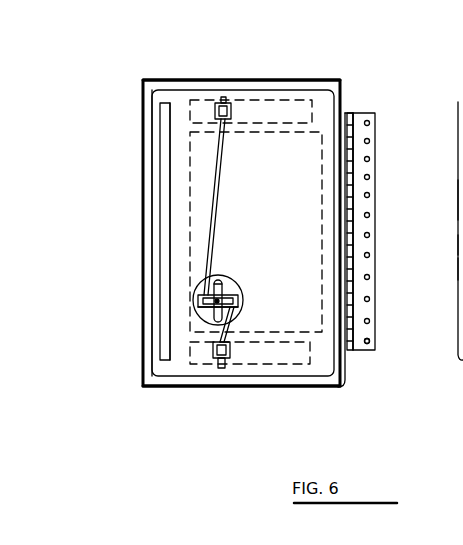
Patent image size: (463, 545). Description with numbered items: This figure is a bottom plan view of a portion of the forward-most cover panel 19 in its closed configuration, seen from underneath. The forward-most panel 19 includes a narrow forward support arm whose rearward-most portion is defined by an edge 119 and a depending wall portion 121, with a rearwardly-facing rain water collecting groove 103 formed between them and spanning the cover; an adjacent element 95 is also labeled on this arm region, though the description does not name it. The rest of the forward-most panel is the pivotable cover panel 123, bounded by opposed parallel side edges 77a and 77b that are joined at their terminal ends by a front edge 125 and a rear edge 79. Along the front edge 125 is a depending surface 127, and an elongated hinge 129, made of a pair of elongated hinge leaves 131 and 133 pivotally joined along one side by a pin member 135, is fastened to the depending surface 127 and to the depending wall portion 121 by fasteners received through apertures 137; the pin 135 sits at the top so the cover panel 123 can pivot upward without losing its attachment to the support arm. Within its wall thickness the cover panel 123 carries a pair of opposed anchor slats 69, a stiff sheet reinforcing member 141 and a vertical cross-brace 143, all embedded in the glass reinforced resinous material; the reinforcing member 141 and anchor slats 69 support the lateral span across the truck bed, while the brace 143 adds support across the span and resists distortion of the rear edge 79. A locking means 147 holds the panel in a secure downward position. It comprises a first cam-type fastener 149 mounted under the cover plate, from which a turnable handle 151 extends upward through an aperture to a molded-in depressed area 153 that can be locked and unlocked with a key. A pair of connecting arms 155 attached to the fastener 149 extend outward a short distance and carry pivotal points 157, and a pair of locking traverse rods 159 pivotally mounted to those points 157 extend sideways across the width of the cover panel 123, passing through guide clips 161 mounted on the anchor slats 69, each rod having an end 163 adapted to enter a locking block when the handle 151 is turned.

The cover panel 19 is at (158, 113).
The anchor slats 69 is at (190, 100).
The side edge 77a is at (272, 388).
The side edge 77b is at (285, 80).
The rear edge 79 is at (150, 199).
The door frame member 95 is at (458, 199).
The rain water collecting groove 103 is at (458, 246).
The edge 119 is at (458, 119).
The depending wall portion 121 is at (458, 268).
The pivotable cover panel 123 is at (336, 388).
The front edge 125 is at (370, 226).
The depending surface 127 is at (345, 374).
The elongated hinge 129 is at (370, 341).
The hinge leaf 131 is at (370, 128).
The hinge leaf 133 is at (355, 151).
The pin member 135 is at (365, 113).
The apertures 137 is at (370, 321).
The reinforcing member 141 is at (190, 190).
The cross-brace 143 is at (168, 147).
The locking means 147 is at (193, 280).
The cam-type fastener 149 is at (205, 317).
The turnable handle 151 is at (220, 279).
The depressed area 153 is at (221, 296).
The connecting arms 155 is at (226, 288).
The pivotal points 157 is at (198, 299).
The locking traverse rods 159 is at (258, 320).
The guide clips 161 is at (212, 105).
The rod end 163 is at (225, 102).